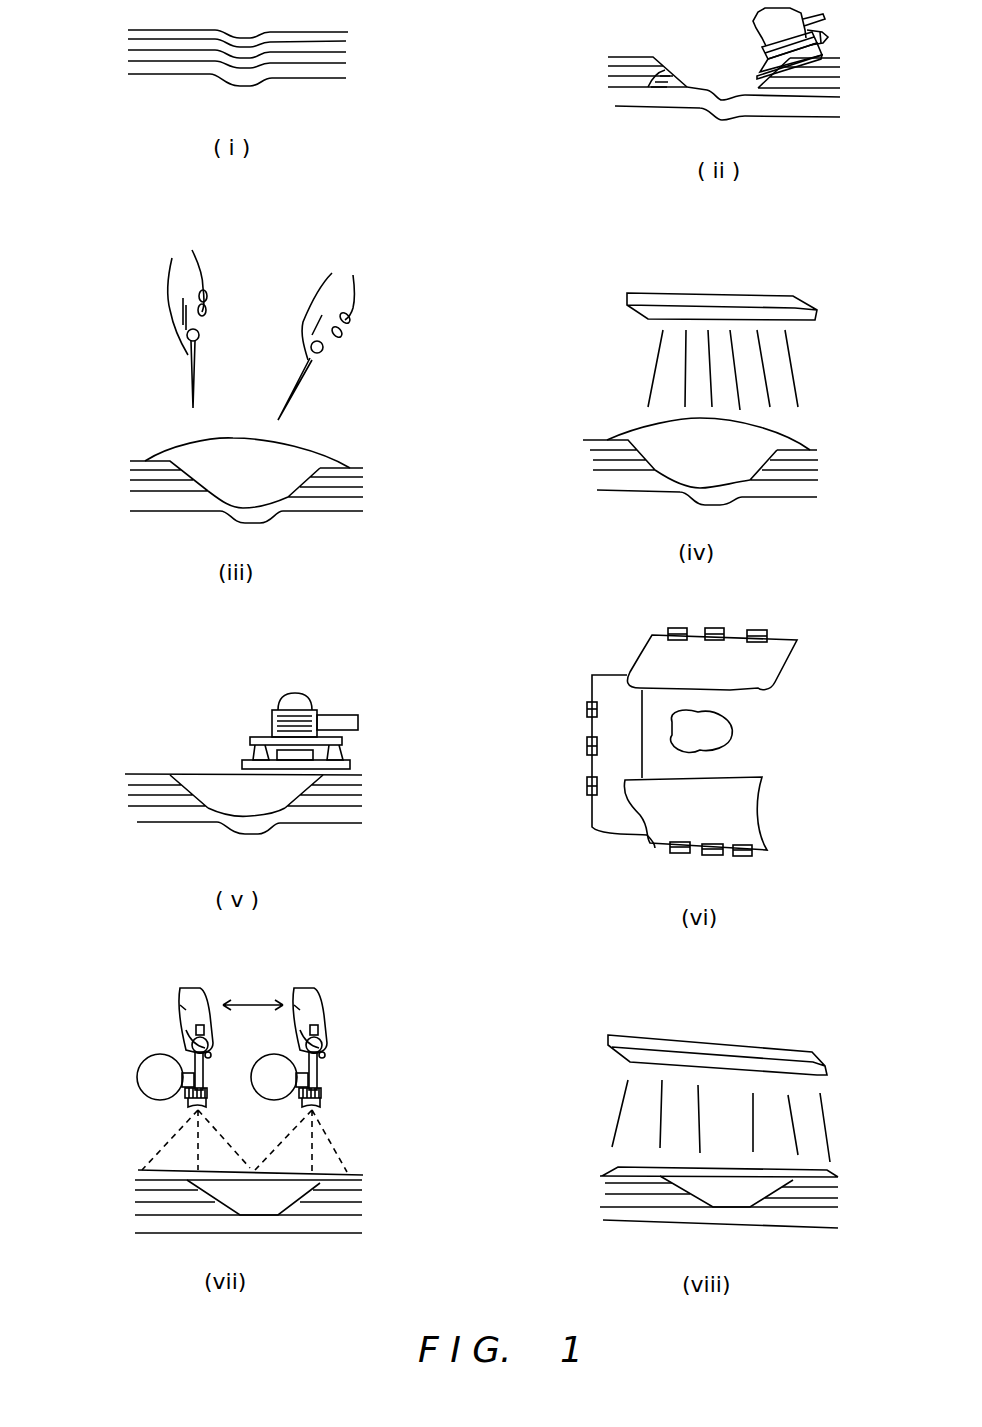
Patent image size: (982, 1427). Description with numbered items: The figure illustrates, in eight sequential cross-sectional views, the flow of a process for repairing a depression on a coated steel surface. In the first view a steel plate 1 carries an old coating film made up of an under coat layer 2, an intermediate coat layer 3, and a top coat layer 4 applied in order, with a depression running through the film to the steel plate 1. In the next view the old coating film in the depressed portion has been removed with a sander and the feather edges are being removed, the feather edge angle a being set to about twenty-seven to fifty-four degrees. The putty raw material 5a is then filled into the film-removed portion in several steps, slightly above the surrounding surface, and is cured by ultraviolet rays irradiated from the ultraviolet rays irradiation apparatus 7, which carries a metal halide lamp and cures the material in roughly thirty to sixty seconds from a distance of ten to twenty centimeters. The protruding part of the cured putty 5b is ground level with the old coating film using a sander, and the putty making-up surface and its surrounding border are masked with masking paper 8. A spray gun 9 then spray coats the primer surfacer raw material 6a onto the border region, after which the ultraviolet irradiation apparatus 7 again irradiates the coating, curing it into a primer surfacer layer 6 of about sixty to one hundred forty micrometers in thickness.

The steel plate 1 is at (340, 72).
The under coat layer 2 is at (345, 63).
The intermediate coat layer 3 is at (345, 50).
The top coat layer 4 is at (345, 40).
The angle of the feather edge a is at (650, 86).
The putty raw material 5a is at (278, 457).
The putty 5b is at (213, 787).
The primer surfacer layer 6 is at (808, 1175).
The primer surfacer raw material 6a is at (218, 1172).
The ultraviolet rays irradiation apparatus 7 is at (770, 303).
The masking paper 8 is at (758, 658).
The spray gun 9 is at (320, 1080).